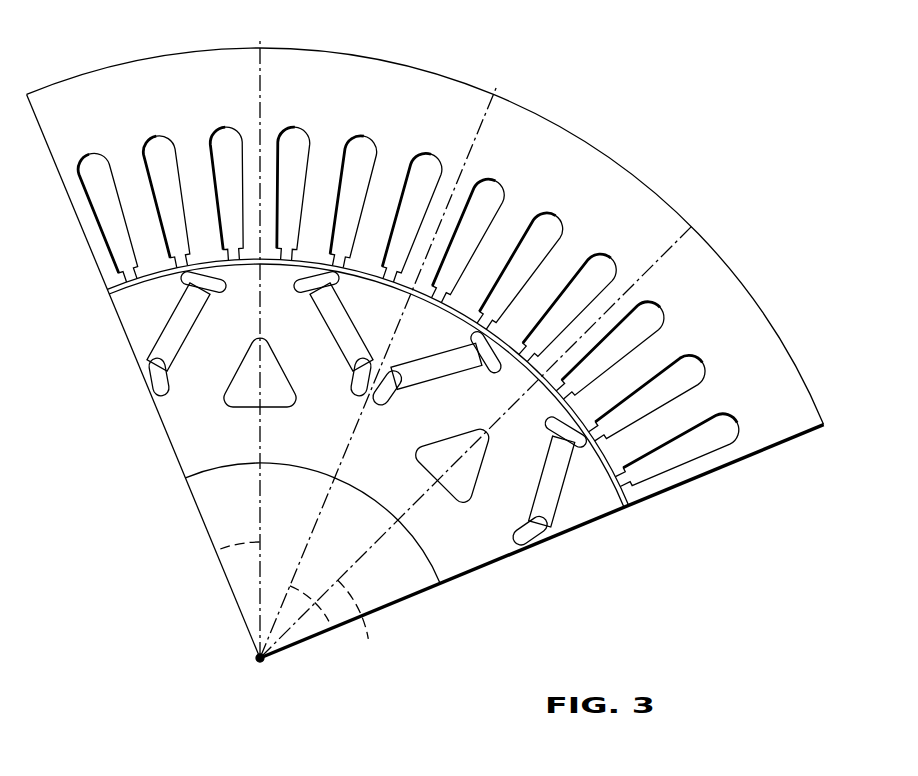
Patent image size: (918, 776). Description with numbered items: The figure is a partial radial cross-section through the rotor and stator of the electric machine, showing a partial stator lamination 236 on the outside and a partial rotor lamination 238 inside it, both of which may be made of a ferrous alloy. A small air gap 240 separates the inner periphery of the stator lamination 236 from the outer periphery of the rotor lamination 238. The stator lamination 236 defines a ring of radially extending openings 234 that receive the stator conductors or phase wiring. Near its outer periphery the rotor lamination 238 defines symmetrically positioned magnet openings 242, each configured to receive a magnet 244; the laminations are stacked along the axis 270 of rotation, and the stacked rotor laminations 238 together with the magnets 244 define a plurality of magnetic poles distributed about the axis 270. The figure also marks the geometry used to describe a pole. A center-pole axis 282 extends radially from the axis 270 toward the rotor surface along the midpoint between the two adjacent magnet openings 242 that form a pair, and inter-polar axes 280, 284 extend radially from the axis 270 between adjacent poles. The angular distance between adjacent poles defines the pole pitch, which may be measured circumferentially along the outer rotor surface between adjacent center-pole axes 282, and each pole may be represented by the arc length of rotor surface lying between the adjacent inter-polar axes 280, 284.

The radially extending openings 234 is at (222, 217).
The stator lamination 236 is at (745, 282).
The rotor lamination 238 is at (452, 553).
The air gap 240 is at (107, 290).
The magnet openings 242 is at (320, 333).
The magnet 244 is at (347, 317).
The axis of rotation 270 is at (258, 659).
The inter-polar axis 280 is at (368, 639).
The center-pole axis 282 is at (329, 621).
The inter-polar axis 284 is at (228, 548).